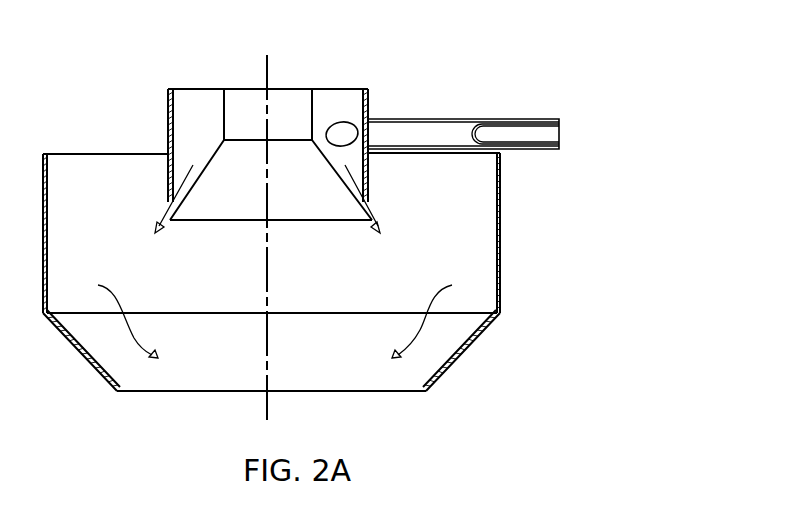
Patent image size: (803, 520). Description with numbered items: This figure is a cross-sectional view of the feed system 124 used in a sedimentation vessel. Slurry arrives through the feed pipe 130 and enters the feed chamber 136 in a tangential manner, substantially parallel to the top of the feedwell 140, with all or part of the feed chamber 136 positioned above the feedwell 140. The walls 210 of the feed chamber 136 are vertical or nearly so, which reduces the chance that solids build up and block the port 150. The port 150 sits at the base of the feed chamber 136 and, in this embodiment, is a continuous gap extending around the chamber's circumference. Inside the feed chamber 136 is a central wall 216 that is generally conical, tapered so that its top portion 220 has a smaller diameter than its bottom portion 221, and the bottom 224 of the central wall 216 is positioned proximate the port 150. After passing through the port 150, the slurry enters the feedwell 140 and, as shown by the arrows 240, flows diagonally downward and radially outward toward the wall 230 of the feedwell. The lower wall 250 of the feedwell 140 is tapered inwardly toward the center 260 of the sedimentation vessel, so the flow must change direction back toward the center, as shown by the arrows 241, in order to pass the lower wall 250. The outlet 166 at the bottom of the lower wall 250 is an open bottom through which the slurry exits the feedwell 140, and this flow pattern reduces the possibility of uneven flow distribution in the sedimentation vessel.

The feed system 124 is at (532, 97).
The feed pipe 130 is at (408, 133).
The feed chamber 136 is at (183, 104).
The feedwell 140 is at (470, 240).
The port 150 is at (170, 210).
The outlet 166 is at (393, 392).
The walls of the feed chamber 210 is at (371, 170).
The central wall 216 is at (323, 130).
The top portion of the central wall 220 is at (227, 108).
The bottom portion of the central wall 221 is at (250, 190).
The bottom of the central wall 224 is at (238, 222).
The wall of the feedwell 230 is at (501, 186).
The arrows 240 is at (162, 222).
The arrows 241 is at (138, 332).
The lower wall of the feedwell 250 is at (465, 350).
The center of the sedimentation vessel 260 is at (263, 405).